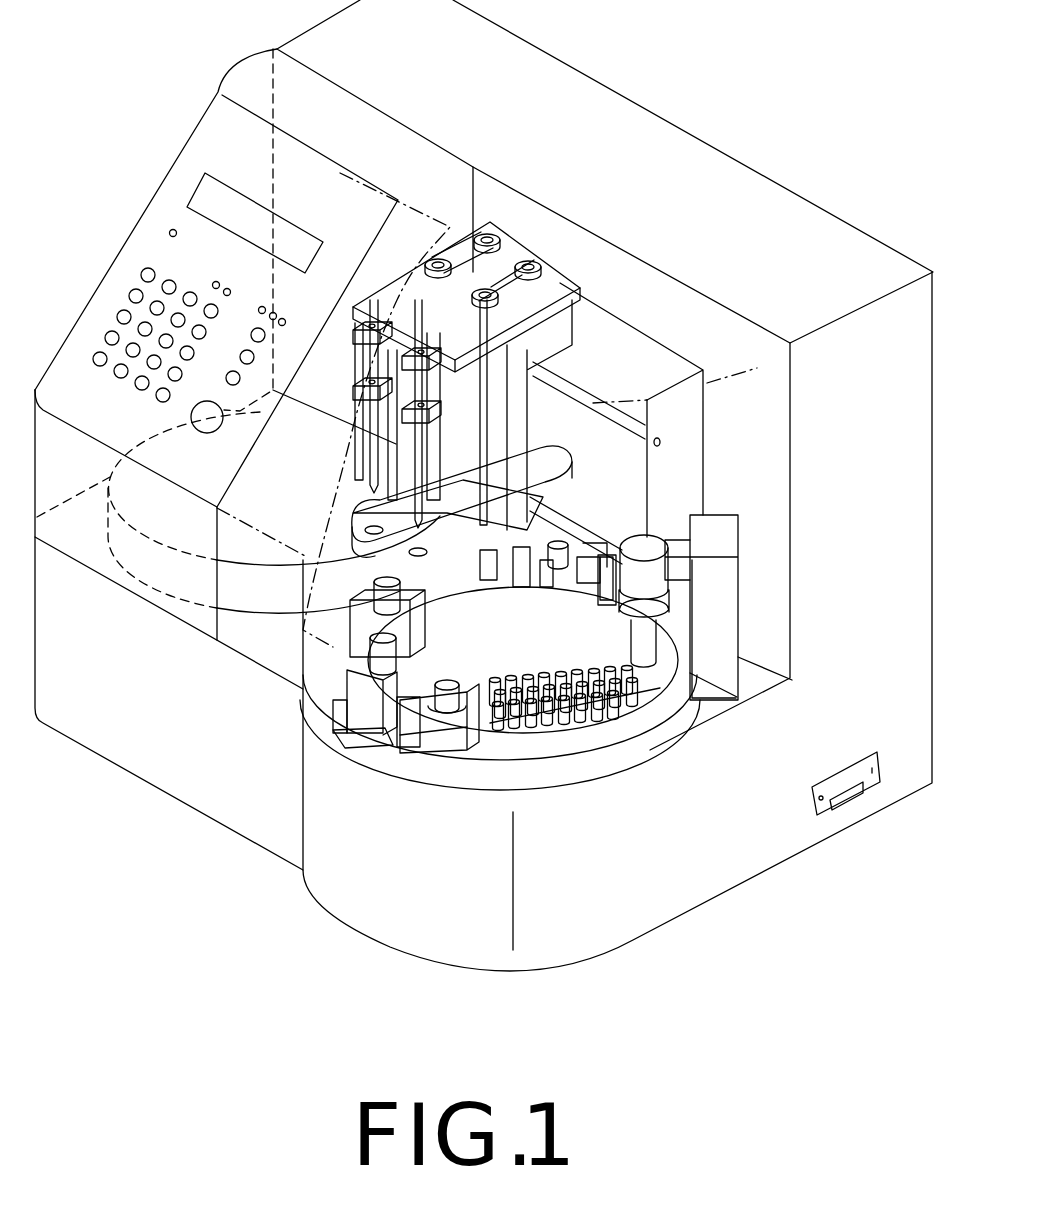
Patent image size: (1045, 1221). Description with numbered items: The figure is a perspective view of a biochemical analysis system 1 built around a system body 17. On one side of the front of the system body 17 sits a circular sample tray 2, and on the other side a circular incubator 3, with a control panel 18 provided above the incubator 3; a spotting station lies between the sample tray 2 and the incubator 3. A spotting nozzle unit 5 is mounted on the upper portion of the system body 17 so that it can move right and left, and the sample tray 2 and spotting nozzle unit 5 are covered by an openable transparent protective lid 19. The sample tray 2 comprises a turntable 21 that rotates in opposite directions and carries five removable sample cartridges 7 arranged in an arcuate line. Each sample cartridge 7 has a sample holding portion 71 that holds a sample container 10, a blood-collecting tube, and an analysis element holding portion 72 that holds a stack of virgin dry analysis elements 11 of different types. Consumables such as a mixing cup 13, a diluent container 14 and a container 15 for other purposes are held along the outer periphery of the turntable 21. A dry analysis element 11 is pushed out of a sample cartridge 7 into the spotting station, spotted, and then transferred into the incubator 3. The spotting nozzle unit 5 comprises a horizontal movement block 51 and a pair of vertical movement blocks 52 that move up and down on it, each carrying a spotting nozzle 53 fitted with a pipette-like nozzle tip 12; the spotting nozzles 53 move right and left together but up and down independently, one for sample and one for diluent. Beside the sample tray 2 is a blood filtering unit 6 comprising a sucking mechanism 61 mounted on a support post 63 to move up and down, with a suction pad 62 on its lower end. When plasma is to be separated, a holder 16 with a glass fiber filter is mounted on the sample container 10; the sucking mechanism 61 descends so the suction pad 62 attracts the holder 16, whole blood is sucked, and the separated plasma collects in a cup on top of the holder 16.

The biochemical analysis system 1 is at (110, 97).
The sample tray 2 is at (502, 763).
The incubator 3 is at (253, 590).
The spotting nozzle unit 5 is at (527, 247).
The blood filtering unit 6 is at (728, 517).
The sample cartridge 7 is at (585, 545).
The sample container 10 is at (390, 603).
The dry analysis element 11 is at (512, 592).
The nozzle tip 12 is at (590, 707).
The mixing cup 13 is at (657, 693).
The diluent container 14 is at (738, 695).
The container for other purposes 15 is at (615, 622).
The holder with a filter 16 is at (452, 693).
The system body 17 is at (752, 182).
The control panel 18 is at (160, 253).
The transparent protective lid 19 is at (763, 380).
The turntable 21 is at (555, 750).
The horizontal movement block 51 is at (557, 327).
The vertical movement block 52 is at (353, 383).
The spotting nozzle 53 is at (360, 472).
The sucking mechanism 61 is at (647, 543).
The suction pad 62 is at (665, 617).
The support post 63 is at (727, 640).
The sample holding portion 71 is at (427, 753).
The analysis element holding portion 72 is at (327, 708).